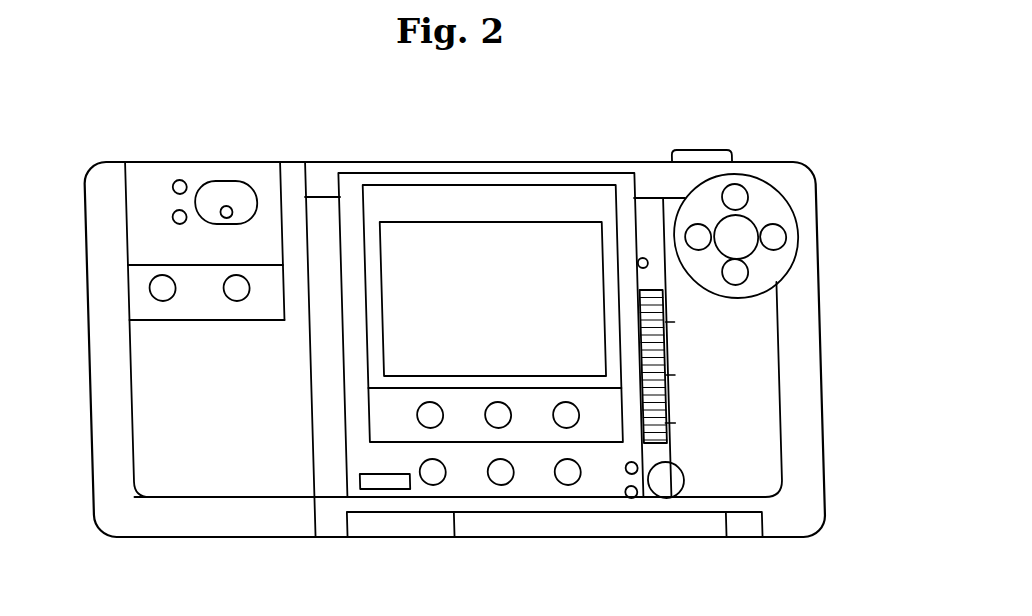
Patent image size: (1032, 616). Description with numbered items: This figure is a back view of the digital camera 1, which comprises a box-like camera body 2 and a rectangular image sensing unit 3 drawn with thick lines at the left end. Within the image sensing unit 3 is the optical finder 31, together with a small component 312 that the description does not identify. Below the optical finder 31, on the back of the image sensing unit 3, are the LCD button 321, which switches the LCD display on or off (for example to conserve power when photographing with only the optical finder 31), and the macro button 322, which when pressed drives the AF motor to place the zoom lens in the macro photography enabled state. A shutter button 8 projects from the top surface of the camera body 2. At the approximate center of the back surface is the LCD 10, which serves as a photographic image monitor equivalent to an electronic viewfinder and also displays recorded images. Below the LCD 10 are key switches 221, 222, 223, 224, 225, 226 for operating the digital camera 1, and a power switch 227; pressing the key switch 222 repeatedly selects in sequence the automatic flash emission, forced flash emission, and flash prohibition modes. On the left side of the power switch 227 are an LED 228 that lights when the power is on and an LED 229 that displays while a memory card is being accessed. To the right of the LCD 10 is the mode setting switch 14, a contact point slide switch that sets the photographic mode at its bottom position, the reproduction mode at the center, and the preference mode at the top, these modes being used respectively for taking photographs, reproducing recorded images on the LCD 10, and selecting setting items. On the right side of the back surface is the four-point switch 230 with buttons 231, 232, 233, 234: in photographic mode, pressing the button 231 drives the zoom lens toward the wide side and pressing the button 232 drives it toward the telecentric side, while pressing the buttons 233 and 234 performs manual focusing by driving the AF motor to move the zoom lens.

The digital camera 1 is at (372, 102).
The camera body 2 is at (476, 160).
The image sensing unit 3 is at (168, 142).
The shutter button 8 is at (708, 150).
The LCD 10 is at (543, 227).
The mode setting switch 14 is at (663, 403).
The optical finder 31 is at (221, 195).
The release button 312 is at (227, 206).
The LCD button 321 is at (234, 293).
The macro button 322 is at (160, 293).
The key switch 221 is at (423, 412).
The key switch 222 is at (491, 412).
The key switch 223 is at (559, 412).
The key switch 224 is at (424, 476).
The key switch 225 is at (492, 476).
The key switch 226 is at (559, 476).
The power switch 227 is at (660, 482).
The LED 228 is at (617, 472).
The LED 229 is at (623, 497).
The 4-point switch 230 is at (782, 187).
The button 231 is at (696, 237).
The button 232 is at (771, 237).
The button 233 is at (734, 197).
The button 234 is at (745, 268).